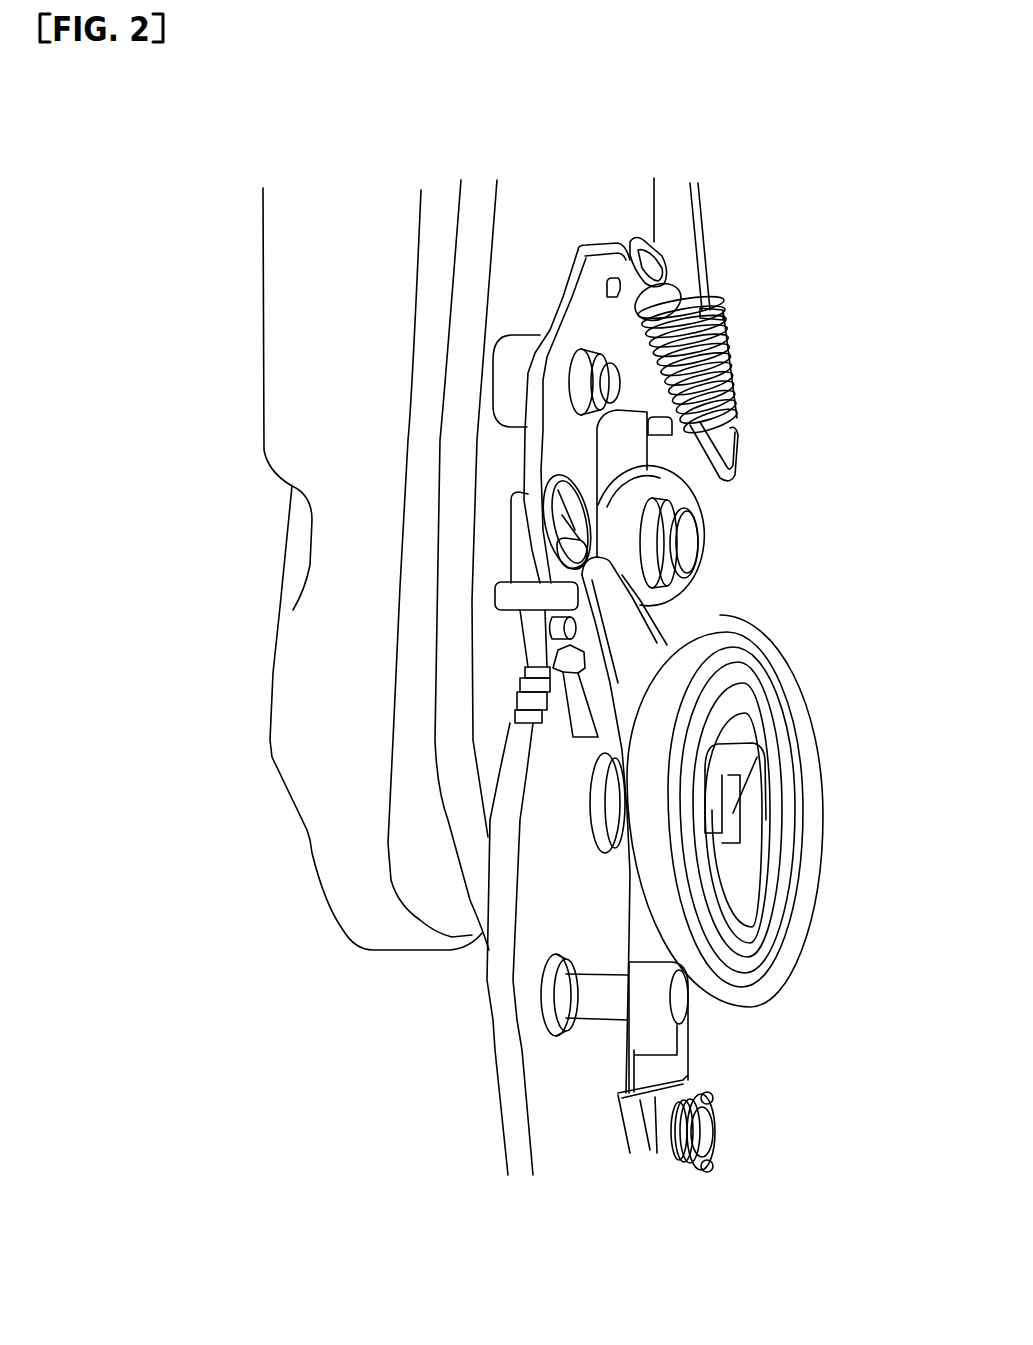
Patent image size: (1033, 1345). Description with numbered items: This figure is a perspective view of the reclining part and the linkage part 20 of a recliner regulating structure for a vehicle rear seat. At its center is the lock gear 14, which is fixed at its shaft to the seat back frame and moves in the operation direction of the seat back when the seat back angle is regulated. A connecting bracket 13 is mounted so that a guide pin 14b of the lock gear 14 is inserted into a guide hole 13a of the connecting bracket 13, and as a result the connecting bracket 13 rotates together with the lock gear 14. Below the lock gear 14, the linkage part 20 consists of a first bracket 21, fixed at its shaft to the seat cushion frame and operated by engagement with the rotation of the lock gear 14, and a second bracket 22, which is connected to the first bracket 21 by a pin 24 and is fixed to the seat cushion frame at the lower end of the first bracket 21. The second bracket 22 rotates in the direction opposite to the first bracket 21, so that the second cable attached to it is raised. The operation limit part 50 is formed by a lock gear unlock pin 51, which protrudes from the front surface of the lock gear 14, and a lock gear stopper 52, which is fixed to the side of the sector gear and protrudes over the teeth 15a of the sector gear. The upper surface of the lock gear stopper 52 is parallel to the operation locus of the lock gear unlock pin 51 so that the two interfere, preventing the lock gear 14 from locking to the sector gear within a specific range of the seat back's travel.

The connecting bracket 13 is at (598, 323).
The guide hole 13a is at (560, 498).
The lock gear 14 is at (620, 543).
The guide pin 14b is at (571, 543).
The teeth 15a is at (517, 717).
The linkage part 20 is at (708, 1073).
The first bracket 21 is at (622, 648).
The second bracket 22 is at (630, 1123).
The pin 24 is at (707, 1133).
The operation limit part 50 is at (118, 723).
The lock gear unlock pin 51 is at (553, 628).
The lock gear stopper 52 is at (563, 698).